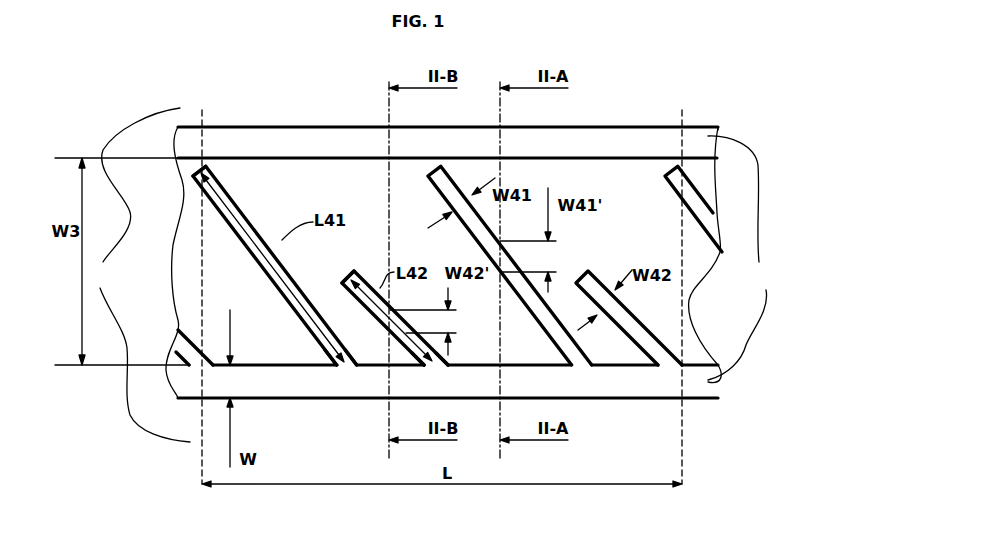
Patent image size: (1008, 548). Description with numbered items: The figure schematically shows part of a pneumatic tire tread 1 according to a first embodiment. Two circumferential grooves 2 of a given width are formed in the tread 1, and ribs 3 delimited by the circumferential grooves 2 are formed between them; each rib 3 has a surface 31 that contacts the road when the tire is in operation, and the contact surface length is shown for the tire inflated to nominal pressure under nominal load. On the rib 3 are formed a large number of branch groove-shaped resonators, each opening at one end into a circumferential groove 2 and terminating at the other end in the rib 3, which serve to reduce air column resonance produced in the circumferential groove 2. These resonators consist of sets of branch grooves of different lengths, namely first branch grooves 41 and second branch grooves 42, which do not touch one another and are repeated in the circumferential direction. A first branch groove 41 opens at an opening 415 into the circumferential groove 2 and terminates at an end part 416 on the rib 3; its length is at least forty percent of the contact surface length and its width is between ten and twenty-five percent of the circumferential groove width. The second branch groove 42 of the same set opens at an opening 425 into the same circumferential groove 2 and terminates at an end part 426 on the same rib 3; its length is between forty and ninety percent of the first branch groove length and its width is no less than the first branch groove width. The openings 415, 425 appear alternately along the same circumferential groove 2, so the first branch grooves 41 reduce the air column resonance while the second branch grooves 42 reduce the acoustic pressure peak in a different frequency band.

The tire tread 1 is at (746, 173).
The circumferential groove 2 is at (731, 255).
The rib 3 is at (190, 243).
The surface 31 is at (215, 107).
The first branch groove 41 is at (253, 218).
The second branch groove 42 is at (355, 299).
The opening 415 is at (345, 370).
The end part 416 is at (203, 167).
The opening 425 is at (452, 350).
The end part 426 is at (343, 280).